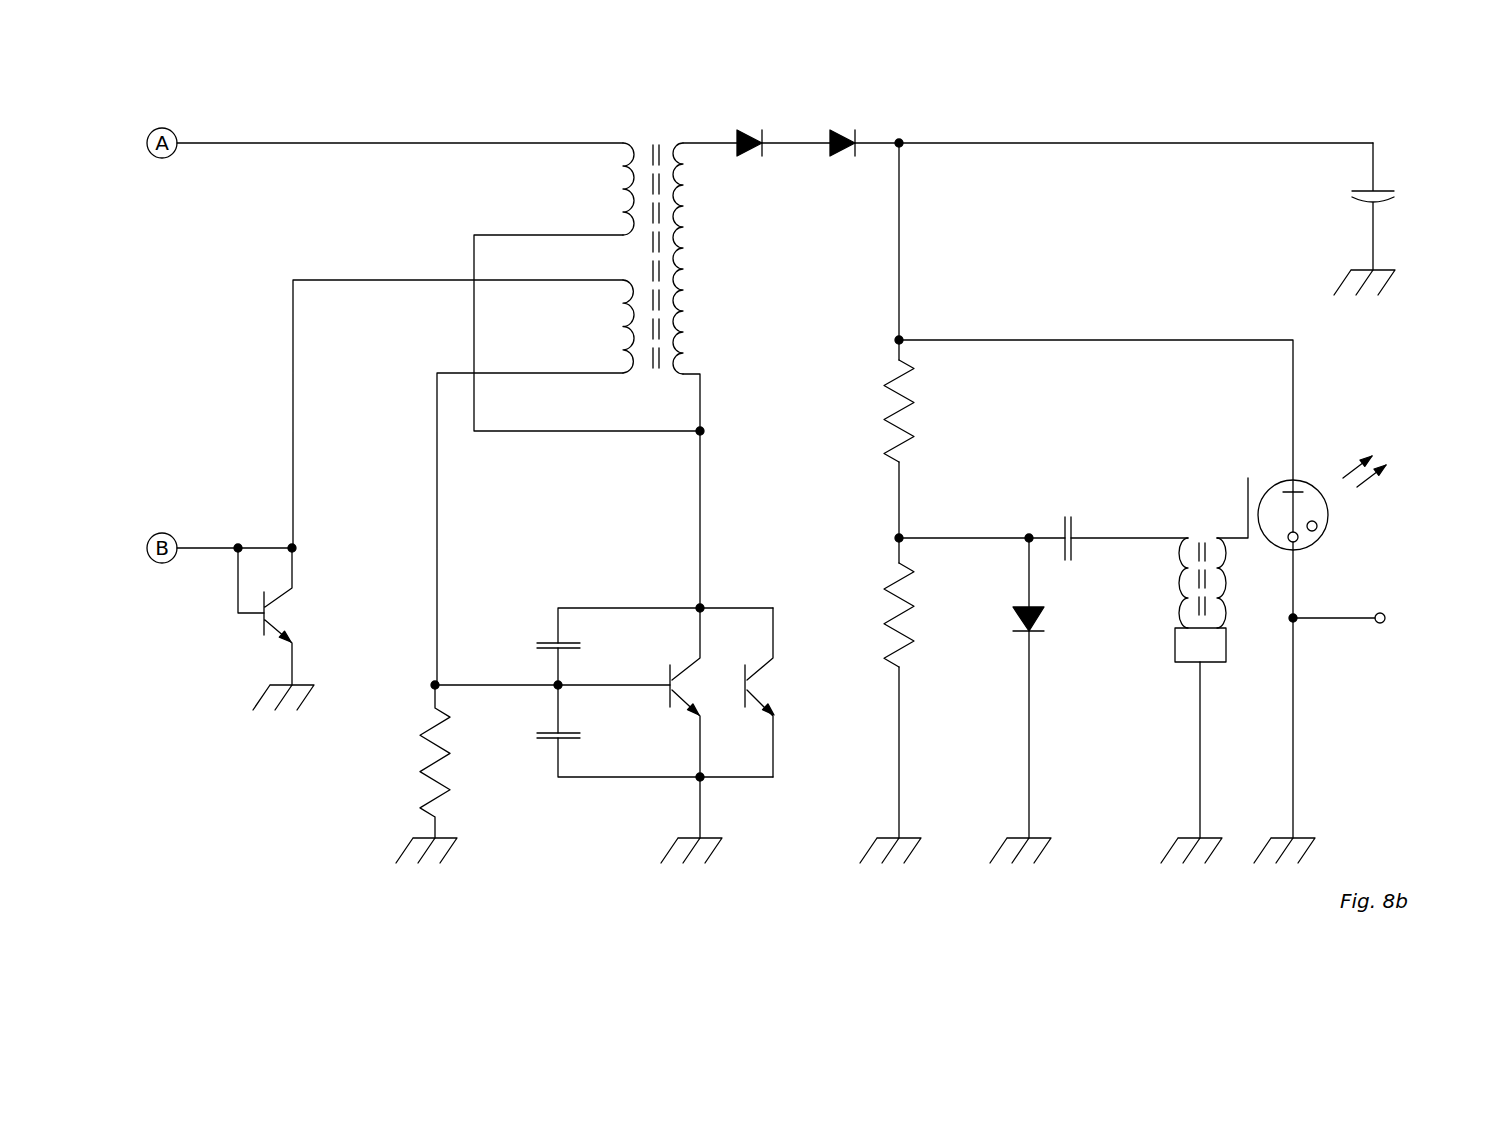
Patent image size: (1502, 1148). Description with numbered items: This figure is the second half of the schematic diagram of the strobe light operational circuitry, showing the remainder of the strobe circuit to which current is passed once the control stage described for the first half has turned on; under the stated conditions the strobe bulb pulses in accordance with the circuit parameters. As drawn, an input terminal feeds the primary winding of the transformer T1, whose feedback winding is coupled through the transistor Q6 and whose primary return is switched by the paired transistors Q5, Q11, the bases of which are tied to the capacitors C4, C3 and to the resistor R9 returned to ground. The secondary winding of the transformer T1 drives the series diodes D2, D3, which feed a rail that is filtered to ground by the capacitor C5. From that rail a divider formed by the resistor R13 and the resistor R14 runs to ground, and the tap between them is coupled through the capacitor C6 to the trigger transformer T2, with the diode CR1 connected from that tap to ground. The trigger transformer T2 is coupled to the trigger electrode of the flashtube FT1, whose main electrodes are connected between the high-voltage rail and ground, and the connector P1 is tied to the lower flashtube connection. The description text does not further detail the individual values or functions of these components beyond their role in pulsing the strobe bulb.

The transformer T1 (PR1 primary, FDBK feedback, SEC secondary windings) T1 is at (645, 243).
The diode D2 BAS21 D2 is at (757, 170).
The diode D3 BAS21 D3 is at (848, 170).
The capacitor C5 is at (1379, 219).
The resistor R13 is at (924, 411).
The resistor R14 is at (922, 615).
The capacitor C6 is at (1049, 530).
The diode CR1 K199 CR1 is at (1046, 698).
The trigger transformer T2 is at (1204, 670).
The flashtube FT1 is at (1356, 657).
The connector P1 is at (1337, 605).
The transistor Q6 2222A Q6 is at (308, 629).
The transistor Q5 2N6714 Q5 is at (649, 692).
The transistor Q11 2N6714 Q11 is at (804, 692).
The capacitor C4 is at (539, 643).
The capacitor C3 is at (539, 737).
The resistor R9 is at (418, 772).